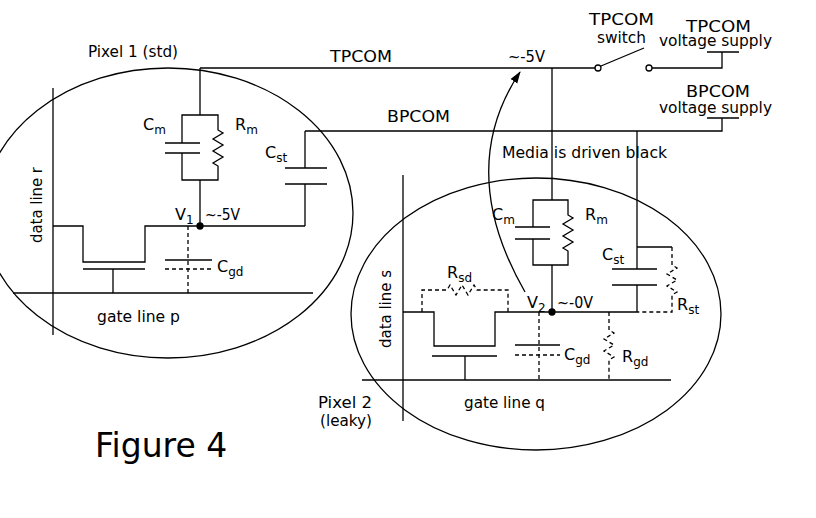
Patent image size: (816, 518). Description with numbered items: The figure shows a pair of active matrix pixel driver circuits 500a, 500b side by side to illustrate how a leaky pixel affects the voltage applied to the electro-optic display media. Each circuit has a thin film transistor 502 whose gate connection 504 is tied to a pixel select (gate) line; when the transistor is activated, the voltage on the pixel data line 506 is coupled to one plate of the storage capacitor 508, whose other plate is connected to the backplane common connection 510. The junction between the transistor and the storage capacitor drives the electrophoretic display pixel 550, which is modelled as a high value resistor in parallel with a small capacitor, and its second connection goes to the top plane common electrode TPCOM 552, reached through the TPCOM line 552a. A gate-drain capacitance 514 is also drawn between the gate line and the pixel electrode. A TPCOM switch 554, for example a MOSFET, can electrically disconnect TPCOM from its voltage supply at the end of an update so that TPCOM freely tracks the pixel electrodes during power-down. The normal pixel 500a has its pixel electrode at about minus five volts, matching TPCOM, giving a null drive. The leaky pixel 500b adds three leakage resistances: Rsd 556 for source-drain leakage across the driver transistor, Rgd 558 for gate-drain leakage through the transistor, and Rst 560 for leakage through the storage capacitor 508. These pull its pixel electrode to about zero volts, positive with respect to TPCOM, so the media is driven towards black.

The active matrix pixel driver circuit 500a is at (83, 352).
The active matrix pixel driver circuit 500b is at (448, 443).
The thin film transistor 502 is at (117, 247).
The gate connection 504 is at (237, 295).
The pixel data line 506 is at (53, 133).
The storage capacitor 508 is at (295, 190).
The backplane common connection 510 is at (704, 131).
The gate-drain capacitance Cgd 514 is at (243, 252).
The electrophoretic display pixel 550 is at (167, 163).
The top pixel electrode common 552 is at (740, 53).
The TPCOM line 552a is at (445, 68).
The TPCOM switch 554 is at (587, 50).
The source-drain leakage resistance 556 is at (462, 255).
The gate-drain leakage resistance 558 is at (644, 338).
The storage capacitor leakage resistance 560 is at (687, 267).